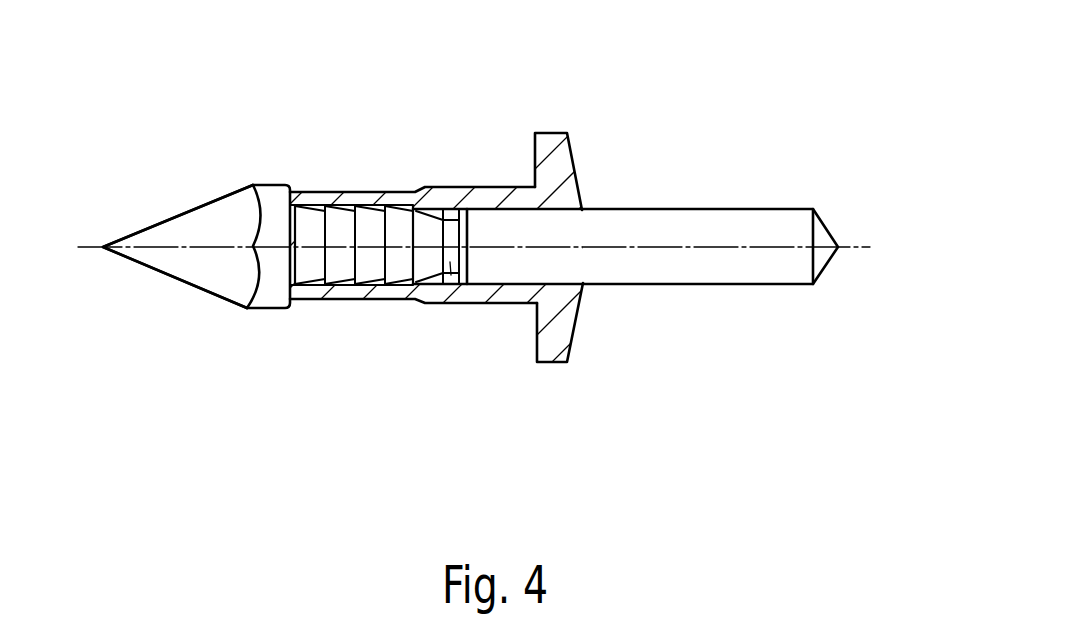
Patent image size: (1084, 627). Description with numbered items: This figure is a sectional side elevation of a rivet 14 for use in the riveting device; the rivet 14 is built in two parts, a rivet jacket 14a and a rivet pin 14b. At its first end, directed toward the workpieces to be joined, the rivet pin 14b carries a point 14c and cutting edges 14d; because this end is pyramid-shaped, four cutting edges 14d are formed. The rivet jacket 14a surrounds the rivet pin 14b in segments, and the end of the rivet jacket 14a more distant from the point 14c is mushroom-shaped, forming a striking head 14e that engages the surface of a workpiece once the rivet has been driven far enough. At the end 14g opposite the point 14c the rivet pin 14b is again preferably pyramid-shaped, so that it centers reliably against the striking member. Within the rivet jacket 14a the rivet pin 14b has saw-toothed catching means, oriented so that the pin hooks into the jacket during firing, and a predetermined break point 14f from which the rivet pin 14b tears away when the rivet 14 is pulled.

The rivet 14 is at (668, 137).
The rivet jacket 14a is at (490, 295).
The rivet pin 14b is at (682, 262).
The point 14c is at (103, 247).
The cutting edges 14d is at (148, 228).
The striking head 14e is at (575, 347).
The predetermined break point 14f is at (452, 287).
The end opposite the point 14g is at (838, 247).